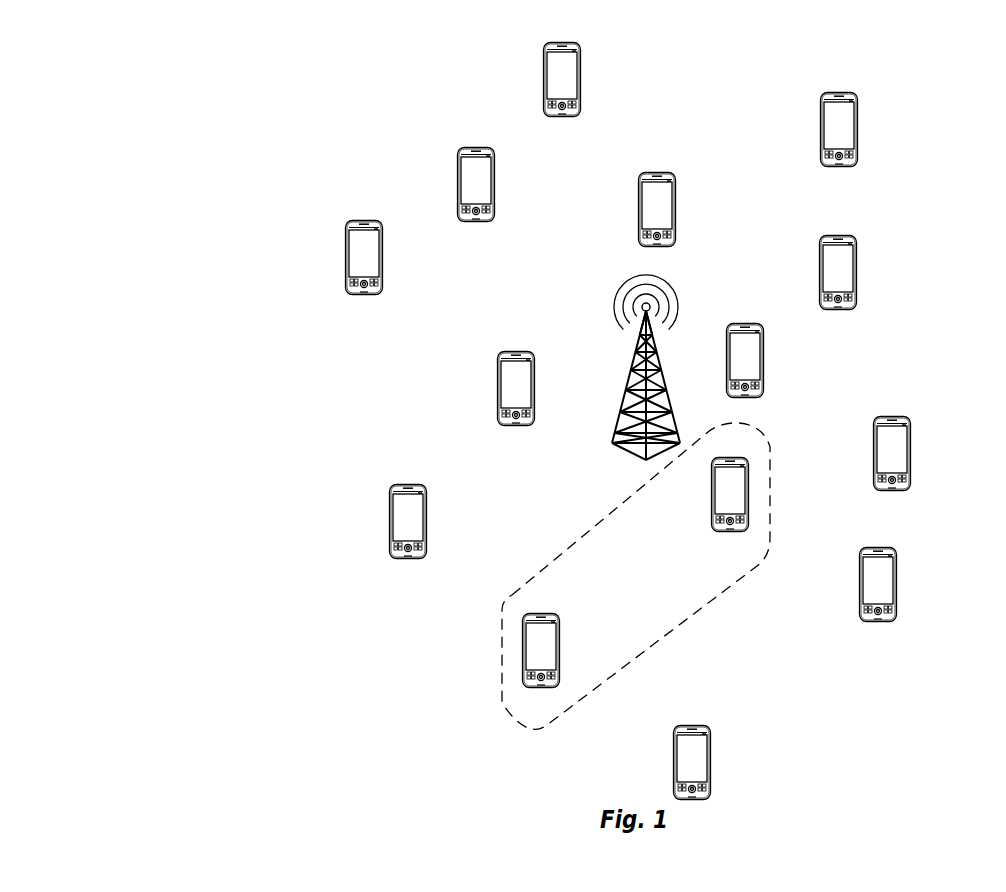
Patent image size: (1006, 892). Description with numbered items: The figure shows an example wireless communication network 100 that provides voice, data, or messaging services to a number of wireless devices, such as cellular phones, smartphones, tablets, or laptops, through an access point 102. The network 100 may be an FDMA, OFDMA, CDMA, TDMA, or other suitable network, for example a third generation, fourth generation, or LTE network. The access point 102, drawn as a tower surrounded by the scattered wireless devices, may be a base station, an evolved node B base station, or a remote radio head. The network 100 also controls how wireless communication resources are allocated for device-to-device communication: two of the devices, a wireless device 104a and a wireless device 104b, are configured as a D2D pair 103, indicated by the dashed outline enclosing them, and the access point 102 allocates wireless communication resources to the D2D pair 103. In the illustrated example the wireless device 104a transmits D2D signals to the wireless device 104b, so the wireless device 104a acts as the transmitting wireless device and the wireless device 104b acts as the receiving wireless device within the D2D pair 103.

The wireless communication network 100 is at (221, 93).
The access point 102 is at (626, 390).
The D2D pair 103 is at (751, 576).
The transmitting wireless device 104a is at (750, 490).
The receiving wireless device 104b is at (522, 649).